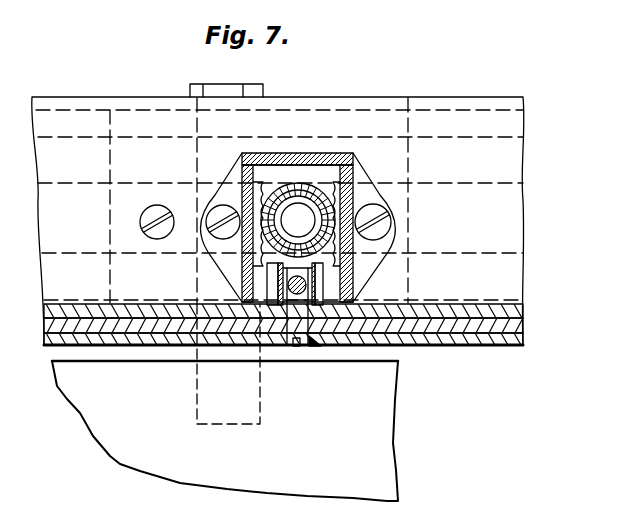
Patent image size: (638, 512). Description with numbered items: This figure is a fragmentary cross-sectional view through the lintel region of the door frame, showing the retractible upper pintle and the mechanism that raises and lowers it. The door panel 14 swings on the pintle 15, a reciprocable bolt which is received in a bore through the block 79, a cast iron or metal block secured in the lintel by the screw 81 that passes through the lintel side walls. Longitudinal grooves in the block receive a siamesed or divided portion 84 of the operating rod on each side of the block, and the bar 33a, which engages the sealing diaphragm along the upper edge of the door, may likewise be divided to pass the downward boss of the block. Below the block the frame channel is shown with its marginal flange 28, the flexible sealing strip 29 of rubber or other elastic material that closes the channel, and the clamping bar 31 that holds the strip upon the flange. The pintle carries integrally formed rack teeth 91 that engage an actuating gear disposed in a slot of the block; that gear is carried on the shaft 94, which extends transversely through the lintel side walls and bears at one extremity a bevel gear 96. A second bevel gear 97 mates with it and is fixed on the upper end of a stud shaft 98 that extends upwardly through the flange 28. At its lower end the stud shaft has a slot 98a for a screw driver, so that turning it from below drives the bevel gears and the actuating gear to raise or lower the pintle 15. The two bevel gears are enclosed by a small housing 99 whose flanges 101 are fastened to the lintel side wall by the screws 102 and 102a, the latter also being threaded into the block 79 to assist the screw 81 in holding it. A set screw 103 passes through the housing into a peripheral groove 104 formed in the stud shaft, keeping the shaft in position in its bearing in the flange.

The door panel 14 is at (398, 437).
The pintle 15 is at (207, 389).
The marginal flange 28 is at (525, 305).
The flexible sealing strip 29 is at (525, 322).
The clamping bar 31 is at (526, 340).
The bar 33a is at (530, 260).
The block 79 is at (396, 118).
The screw 81 is at (140, 218).
The divided portion of rod 84 is at (497, 152).
The rack teeth 91 is at (241, 273).
The shaft 94 is at (299, 218).
The bevel gear 96 is at (334, 196).
The second bevel gear 97 is at (355, 244).
The stud shaft 98 is at (314, 340).
The slot 98a is at (297, 348).
The housing 99 is at (284, 155).
The flange 101 is at (372, 195).
The screw 102 is at (216, 234).
The screw 102a is at (383, 223).
The set screw 103 is at (316, 292).
The peripheral groove 104 is at (296, 292).